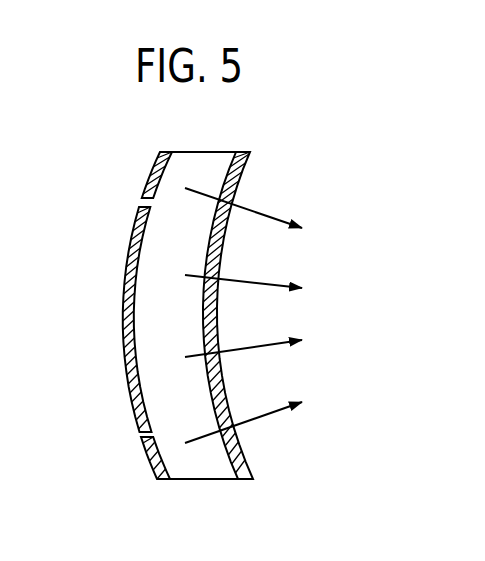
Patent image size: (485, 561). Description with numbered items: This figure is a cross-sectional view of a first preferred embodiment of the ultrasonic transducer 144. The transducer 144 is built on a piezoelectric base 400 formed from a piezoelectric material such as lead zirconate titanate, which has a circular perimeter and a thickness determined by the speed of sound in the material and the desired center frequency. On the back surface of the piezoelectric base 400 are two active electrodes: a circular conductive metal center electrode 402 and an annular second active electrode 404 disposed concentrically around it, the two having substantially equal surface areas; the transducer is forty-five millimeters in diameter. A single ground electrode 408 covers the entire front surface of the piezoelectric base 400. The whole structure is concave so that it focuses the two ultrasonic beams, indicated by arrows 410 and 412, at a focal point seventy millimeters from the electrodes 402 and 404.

The transducer 144 is at (112, 366).
The piezoelectric base 400 is at (203, 483).
The active electrode 402 is at (123, 292).
The second active electrode 404 is at (148, 175).
The ground electrode 408 is at (245, 458).
The arrow 410 is at (256, 212).
The arrow 412 is at (254, 283).